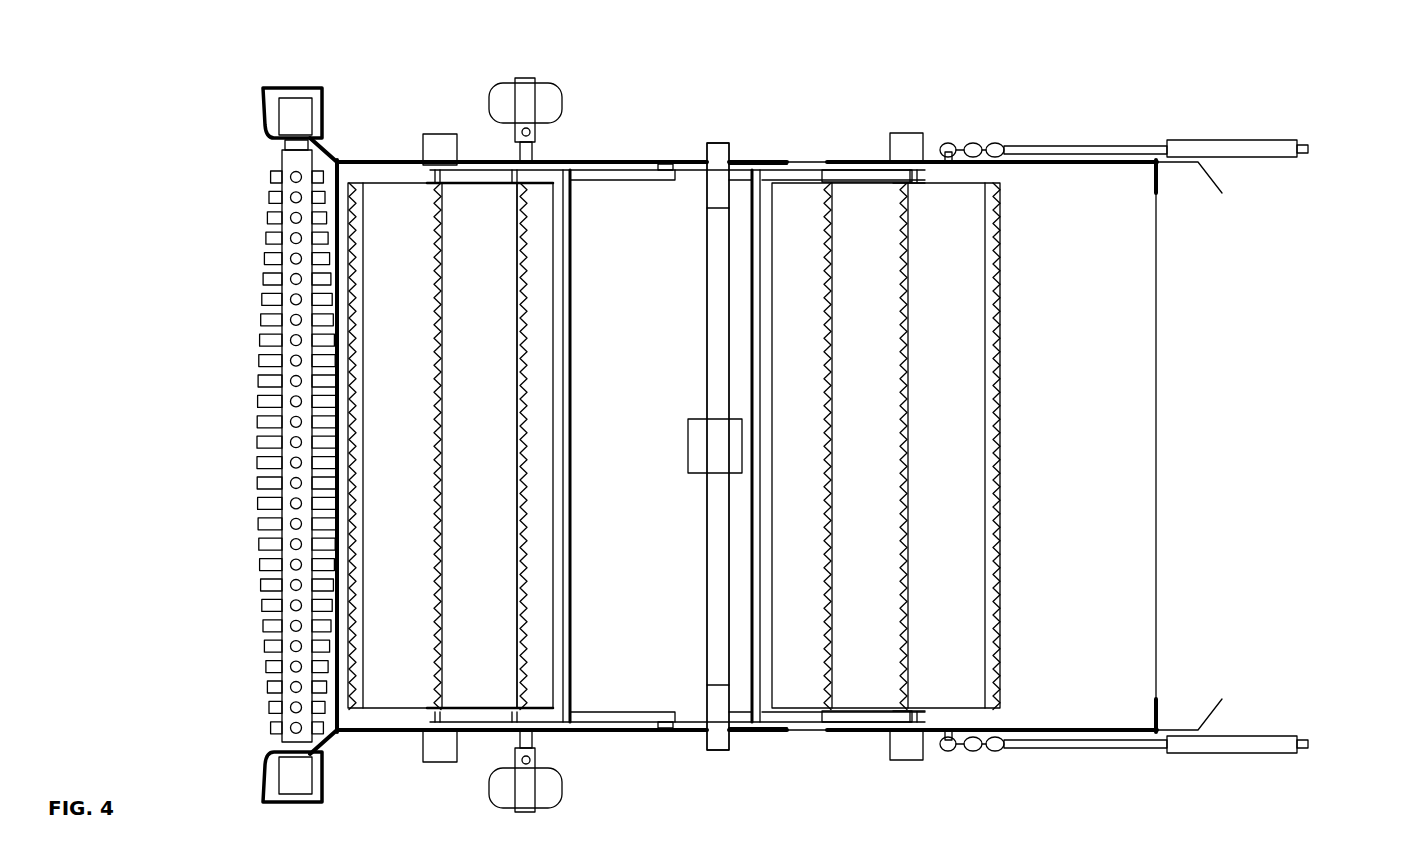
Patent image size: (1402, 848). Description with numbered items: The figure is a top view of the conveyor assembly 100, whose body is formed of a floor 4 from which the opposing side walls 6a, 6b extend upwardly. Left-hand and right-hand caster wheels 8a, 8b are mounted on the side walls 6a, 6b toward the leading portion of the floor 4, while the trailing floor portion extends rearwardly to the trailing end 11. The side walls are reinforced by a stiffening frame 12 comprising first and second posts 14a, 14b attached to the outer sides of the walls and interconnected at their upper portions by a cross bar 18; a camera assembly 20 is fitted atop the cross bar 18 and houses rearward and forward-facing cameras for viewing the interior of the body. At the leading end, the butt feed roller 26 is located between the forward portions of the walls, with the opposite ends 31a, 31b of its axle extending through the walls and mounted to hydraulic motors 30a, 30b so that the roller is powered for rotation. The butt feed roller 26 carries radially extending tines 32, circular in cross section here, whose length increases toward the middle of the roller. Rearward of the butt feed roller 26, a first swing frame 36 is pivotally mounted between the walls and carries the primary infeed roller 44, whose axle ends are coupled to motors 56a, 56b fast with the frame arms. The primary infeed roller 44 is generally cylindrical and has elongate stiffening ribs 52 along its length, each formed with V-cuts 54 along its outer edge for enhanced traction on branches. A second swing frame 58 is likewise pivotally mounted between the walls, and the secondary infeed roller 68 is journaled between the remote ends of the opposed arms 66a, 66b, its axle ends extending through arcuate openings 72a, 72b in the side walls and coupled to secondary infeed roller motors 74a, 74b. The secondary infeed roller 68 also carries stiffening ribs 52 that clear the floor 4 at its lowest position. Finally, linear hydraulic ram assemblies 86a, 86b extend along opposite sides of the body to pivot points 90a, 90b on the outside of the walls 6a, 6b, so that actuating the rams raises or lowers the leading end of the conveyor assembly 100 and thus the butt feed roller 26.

The conveyor assembly 100 is at (372, 76).
The floor 4 is at (633, 222).
The side wall 6a is at (786, 734).
The side wall 6b is at (760, 160).
The caster wheel 8a is at (550, 785).
The caster wheel 8b is at (550, 103).
The trailing end 11 is at (1157, 398).
The stiffening frame 12 is at (714, 627).
The first post 14a is at (720, 752).
The second post 14b is at (722, 143).
The cross bar 18 is at (715, 580).
The camera assembly 20 is at (715, 446).
The butt feed roller 26 is at (256, 624).
The hydraulic motor 30a is at (295, 782).
The hydraulic motor 30b is at (293, 112).
The axle end 31a is at (290, 754).
The axle end 31b is at (293, 134).
The tines 32 is at (262, 502).
The first swing frame 36 is at (568, 455).
The primary infeed roller 44 is at (450, 446).
The stiffening ribs 52 is at (530, 345).
The V-cuts 54 is at (530, 298).
The motor 56a is at (440, 755).
The motor 56b is at (440, 140).
The second swing frame 58 is at (767, 402).
The opposed arm 66a is at (856, 720).
The opposed arm 66b is at (856, 170).
The secondary infeed roller 68 is at (886, 446).
The side wall opening 72a is at (807, 733).
The side wall opening 72b is at (807, 160).
The secondary infeed roller motor 74a is at (907, 748).
The secondary infeed roller motor 74b is at (907, 145).
The linear hydraulic ram assembly 86a is at (1172, 774).
The linear hydraulic ram assembly 86b is at (1172, 118).
The pivot point 90a is at (955, 746).
The pivot point 90b is at (950, 153).